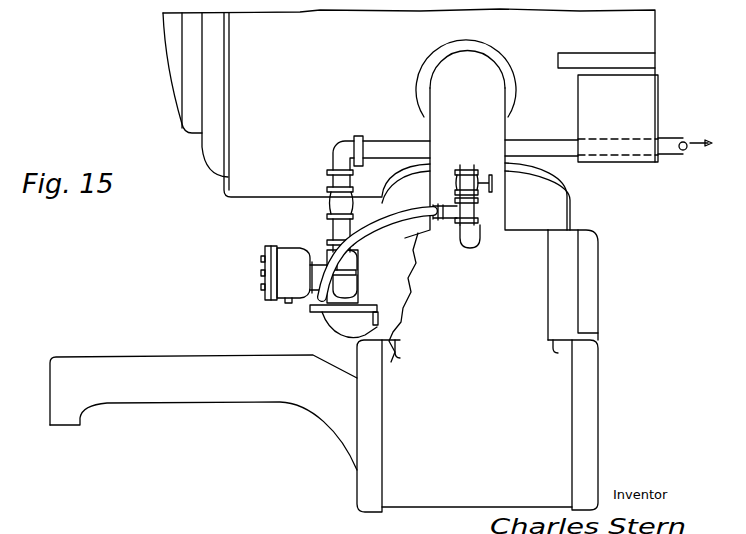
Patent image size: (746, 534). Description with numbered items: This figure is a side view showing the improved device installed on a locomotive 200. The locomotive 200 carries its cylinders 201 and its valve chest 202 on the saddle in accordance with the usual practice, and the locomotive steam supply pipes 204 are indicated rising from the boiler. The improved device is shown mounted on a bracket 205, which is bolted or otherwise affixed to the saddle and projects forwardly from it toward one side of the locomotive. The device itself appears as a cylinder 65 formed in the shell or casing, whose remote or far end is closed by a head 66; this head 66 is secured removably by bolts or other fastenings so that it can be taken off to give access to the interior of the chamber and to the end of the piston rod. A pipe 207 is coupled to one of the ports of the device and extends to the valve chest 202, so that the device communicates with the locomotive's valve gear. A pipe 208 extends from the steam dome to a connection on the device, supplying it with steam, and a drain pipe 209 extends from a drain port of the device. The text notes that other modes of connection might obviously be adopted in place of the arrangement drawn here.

The locomotive 200 is at (410, 119).
The cylinders 201 is at (324, 426).
The valve chest 202 is at (573, 307).
The locomotive steam supply pipes 204 is at (468, 201).
The bracket 205 is at (355, 325).
The pipe 207 is at (403, 218).
The pipe 208 is at (572, 154).
The drain pipe 209 is at (328, 315).
The cylinder 65 is at (289, 257).
The head 66 is at (265, 270).